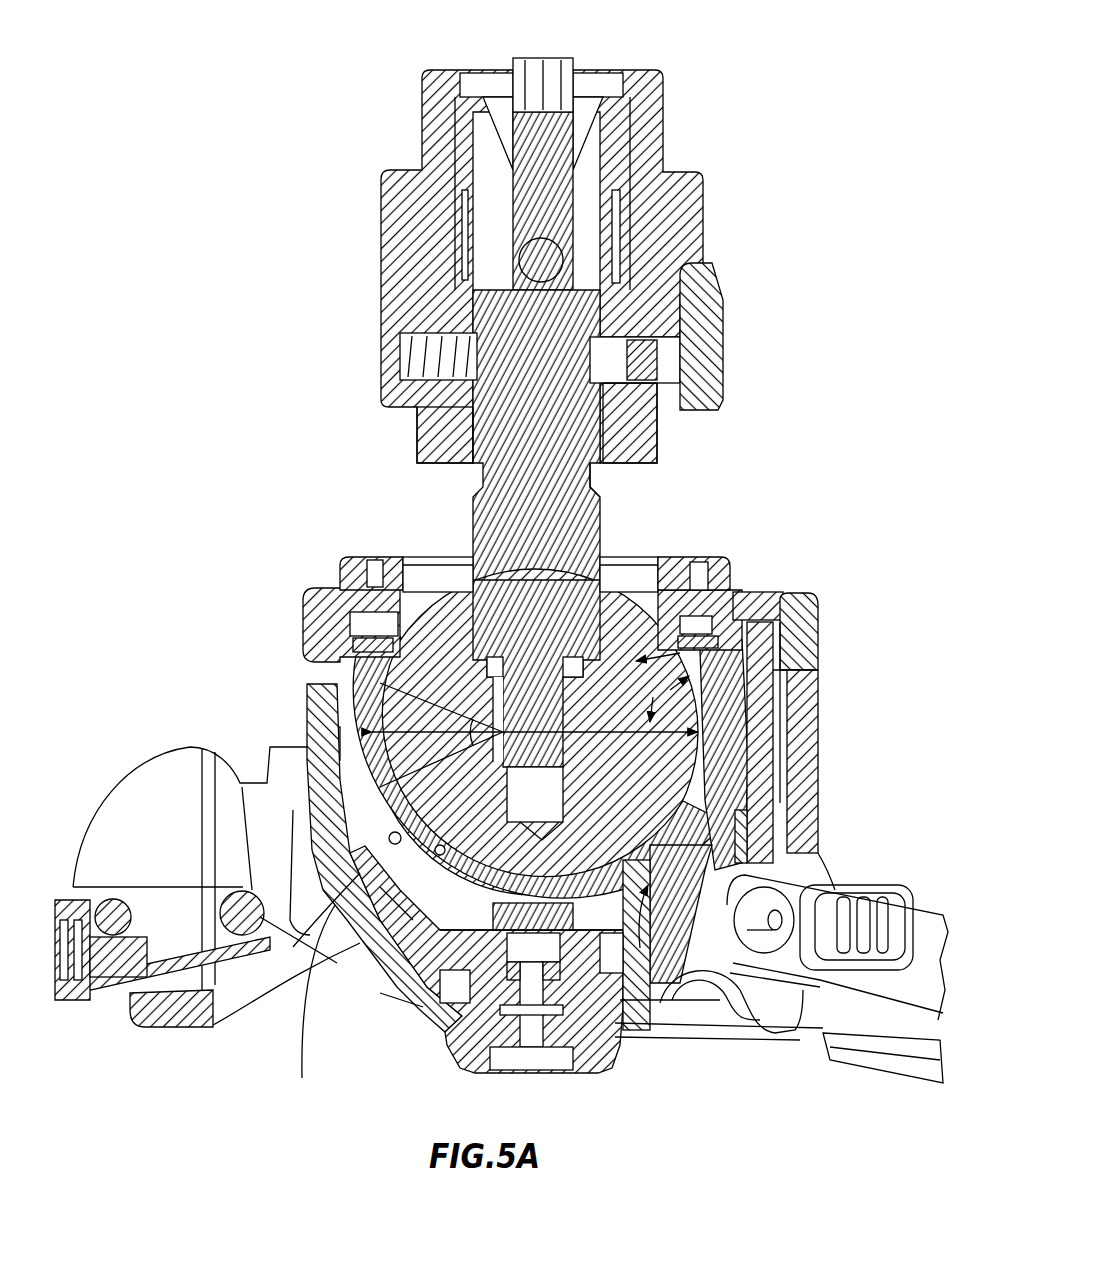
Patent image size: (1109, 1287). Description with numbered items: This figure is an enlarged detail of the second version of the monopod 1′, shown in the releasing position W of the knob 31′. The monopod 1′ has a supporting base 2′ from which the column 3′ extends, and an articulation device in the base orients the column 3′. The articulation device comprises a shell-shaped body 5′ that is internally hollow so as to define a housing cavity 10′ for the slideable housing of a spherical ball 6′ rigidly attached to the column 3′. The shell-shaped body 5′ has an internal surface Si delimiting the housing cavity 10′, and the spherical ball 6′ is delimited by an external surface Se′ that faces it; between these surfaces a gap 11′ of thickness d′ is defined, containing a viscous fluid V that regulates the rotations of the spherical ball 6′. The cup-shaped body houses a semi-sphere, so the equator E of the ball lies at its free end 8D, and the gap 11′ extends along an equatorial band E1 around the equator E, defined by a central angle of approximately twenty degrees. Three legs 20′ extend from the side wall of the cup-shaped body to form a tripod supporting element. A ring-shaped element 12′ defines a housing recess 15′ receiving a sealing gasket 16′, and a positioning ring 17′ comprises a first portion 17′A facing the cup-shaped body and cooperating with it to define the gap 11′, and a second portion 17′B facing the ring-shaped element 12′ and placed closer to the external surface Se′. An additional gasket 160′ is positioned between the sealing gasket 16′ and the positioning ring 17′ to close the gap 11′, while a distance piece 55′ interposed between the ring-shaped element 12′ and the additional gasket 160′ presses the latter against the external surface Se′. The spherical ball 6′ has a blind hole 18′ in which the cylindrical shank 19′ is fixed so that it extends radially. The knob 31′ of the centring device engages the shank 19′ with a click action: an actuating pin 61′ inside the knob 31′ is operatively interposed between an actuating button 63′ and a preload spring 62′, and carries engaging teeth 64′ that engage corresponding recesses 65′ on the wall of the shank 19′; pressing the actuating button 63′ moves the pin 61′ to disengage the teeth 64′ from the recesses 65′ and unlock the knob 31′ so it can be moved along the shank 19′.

The releasing position W is at (537, 384).
The monopod 1′ is at (222, 412).
The knob 31′ is at (720, 262).
The actuating button 63′ is at (718, 325).
The actuating pin 61′ is at (672, 362).
The shank 19′ is at (660, 405).
The recesses 65′ is at (603, 488).
The column 3′ is at (712, 462).
The preload spring 62′ is at (400, 352).
The engaging teeth 64′ is at (420, 412).
The additional gasket 160′ is at (330, 590).
The ring-shaped element 12′ is at (365, 612).
The sealing gasket 16′ is at (375, 560).
The housing recess 15′ is at (400, 558).
The positioning ring 17′ is at (322, 680).
The free end of the cup-shaped body 8D is at (305, 668).
The shell-shaped body 5′ is at (556, 797).
The housing cavity 10′ is at (367, 757).
The external surface Se′ is at (662, 603).
The spherical ball 6′ is at (720, 548).
The distance piece 55′ is at (755, 590).
The second portion of the positioning ring 17′B is at (740, 630).
The first portion of the positioning ring 17′A is at (790, 655).
The gap 11′ is at (722, 705).
The equator E is at (662, 687).
The equatorial band E1 is at (392, 758).
The blind hole 18′ is at (552, 806).
The legs 20′ is at (501, 931).
The thickness d′ is at (293, 940).
The internal surface Si is at (313, 1007).
The supporting base 2′ is at (500, 978).
The viscous fluid V is at (620, 1042).